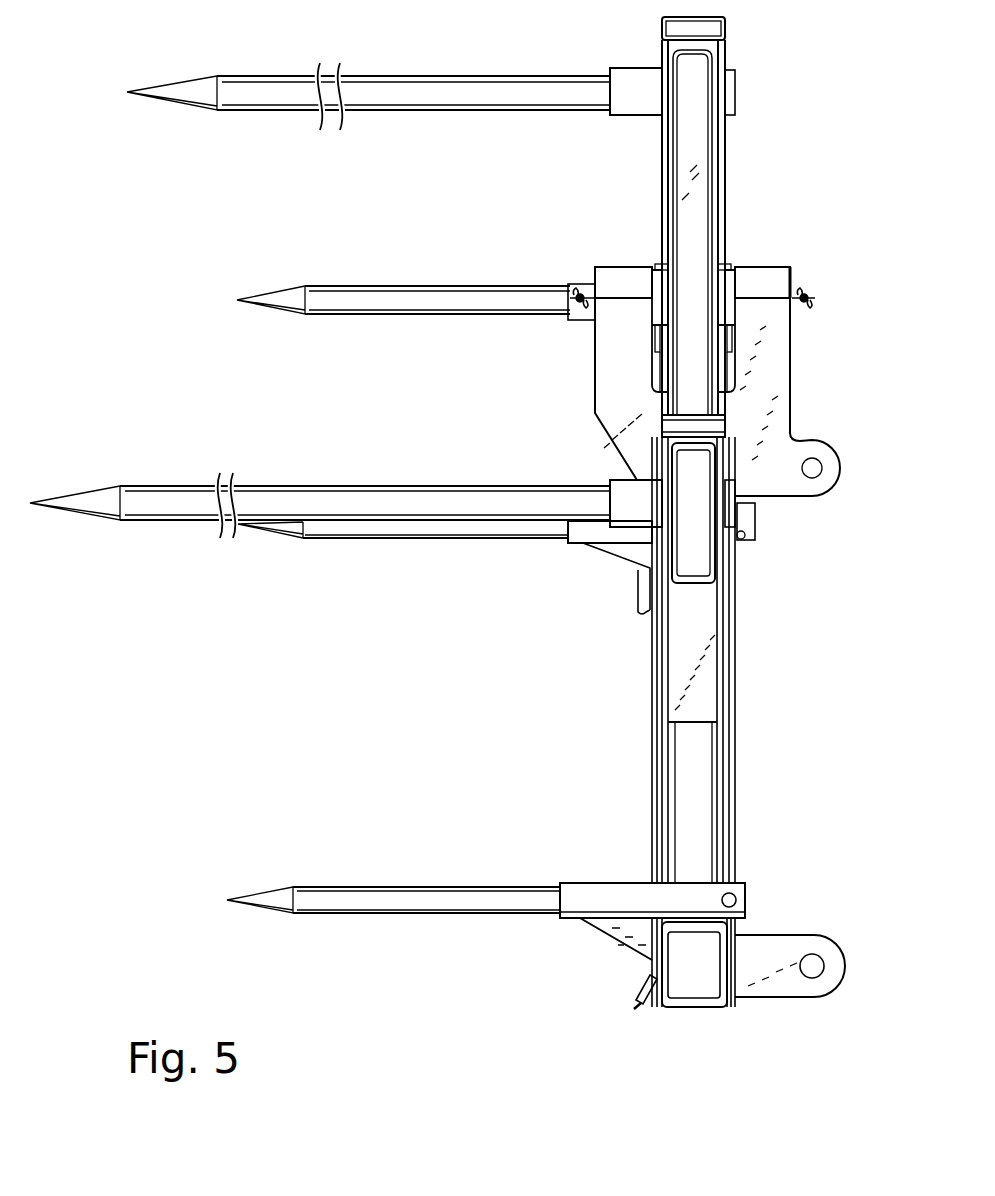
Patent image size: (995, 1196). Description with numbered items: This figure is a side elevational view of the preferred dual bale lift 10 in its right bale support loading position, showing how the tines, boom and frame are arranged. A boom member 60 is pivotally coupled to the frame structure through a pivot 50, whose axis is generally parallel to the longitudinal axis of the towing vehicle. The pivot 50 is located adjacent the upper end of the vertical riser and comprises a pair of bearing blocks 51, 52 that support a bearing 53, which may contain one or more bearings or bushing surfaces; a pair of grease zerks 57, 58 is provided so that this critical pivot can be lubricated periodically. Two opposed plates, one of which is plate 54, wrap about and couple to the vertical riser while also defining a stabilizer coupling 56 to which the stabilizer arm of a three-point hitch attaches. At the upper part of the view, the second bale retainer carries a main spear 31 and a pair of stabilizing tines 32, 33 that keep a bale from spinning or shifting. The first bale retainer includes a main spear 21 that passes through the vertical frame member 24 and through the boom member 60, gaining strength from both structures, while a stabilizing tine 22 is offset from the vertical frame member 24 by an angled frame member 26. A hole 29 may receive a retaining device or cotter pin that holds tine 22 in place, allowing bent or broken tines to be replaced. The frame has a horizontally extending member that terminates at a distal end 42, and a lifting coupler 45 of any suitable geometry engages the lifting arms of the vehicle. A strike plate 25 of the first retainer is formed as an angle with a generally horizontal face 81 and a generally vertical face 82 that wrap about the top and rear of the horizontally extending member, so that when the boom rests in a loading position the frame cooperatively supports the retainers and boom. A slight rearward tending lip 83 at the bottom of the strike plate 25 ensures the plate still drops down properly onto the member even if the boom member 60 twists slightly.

The dual bale lift 10 is at (123, 57).
The main spear 21 is at (297, 497).
The stabilizing tine 22 is at (373, 898).
The vertical frame member 24 is at (680, 628).
The strike plate 25 is at (642, 992).
The angled frame member 26 is at (688, 767).
The hole 29 is at (738, 900).
The main spear 31 is at (407, 98).
The stabilizing tine 32 is at (378, 302).
The stabilizing tine 33 is at (358, 528).
The distal end 42 is at (683, 1003).
The lifting coupler 45 is at (780, 966).
The pivot 50 is at (760, 256).
The bearing block 51 is at (775, 272).
The bearing block 52 is at (618, 270).
The bearing 53 is at (660, 298).
The opposed plate 54 is at (641, 402).
The stabilizer coupling 56 is at (807, 492).
The grease zerk 57 is at (813, 293).
The grease zerk 58 is at (568, 287).
The boom member 60 is at (690, 144).
The horizontal face 81 is at (744, 920).
The vertical face 82 is at (652, 964).
The rearward tending lip 83 is at (638, 1001).